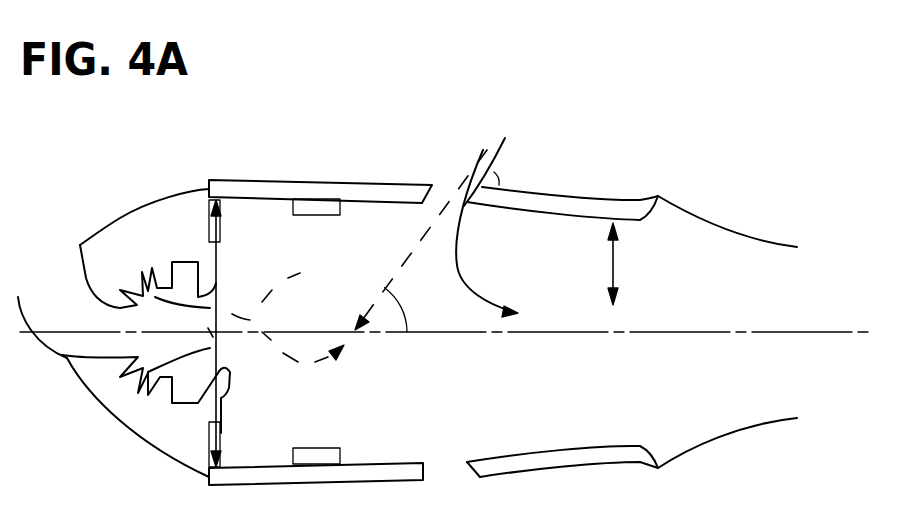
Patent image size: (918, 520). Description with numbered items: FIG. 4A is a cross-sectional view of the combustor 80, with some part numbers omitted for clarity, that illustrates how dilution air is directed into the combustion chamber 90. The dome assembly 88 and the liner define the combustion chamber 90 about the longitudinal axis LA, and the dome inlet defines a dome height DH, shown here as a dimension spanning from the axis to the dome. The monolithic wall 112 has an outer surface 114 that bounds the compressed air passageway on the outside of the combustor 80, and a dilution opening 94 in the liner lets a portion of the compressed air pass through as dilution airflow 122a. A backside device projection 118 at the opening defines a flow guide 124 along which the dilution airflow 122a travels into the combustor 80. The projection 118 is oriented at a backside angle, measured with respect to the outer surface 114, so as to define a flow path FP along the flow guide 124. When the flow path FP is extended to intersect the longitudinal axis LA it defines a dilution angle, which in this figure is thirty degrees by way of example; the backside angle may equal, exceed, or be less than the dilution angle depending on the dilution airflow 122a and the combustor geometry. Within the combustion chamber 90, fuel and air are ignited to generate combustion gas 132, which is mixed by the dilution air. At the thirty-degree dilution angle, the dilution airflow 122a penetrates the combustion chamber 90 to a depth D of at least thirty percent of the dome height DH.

The combustor 80 is at (578, 144).
The dome assembly 88 is at (126, 226).
The combustion chamber 90 is at (567, 305).
The dilution openings 94 is at (442, 172).
The monolithic wall 112 is at (483, 186).
The outer surface 114 is at (580, 208).
The backside device projection 118 is at (510, 157).
The dilution airflow 122a is at (483, 150).
The flow guide 124 is at (494, 190).
The combustion gas 132 is at (282, 308).
The depth D is at (617, 273).
The dome height DH is at (216, 294).
The flow path FP is at (412, 249).
The longitudinal axis LA is at (672, 332).